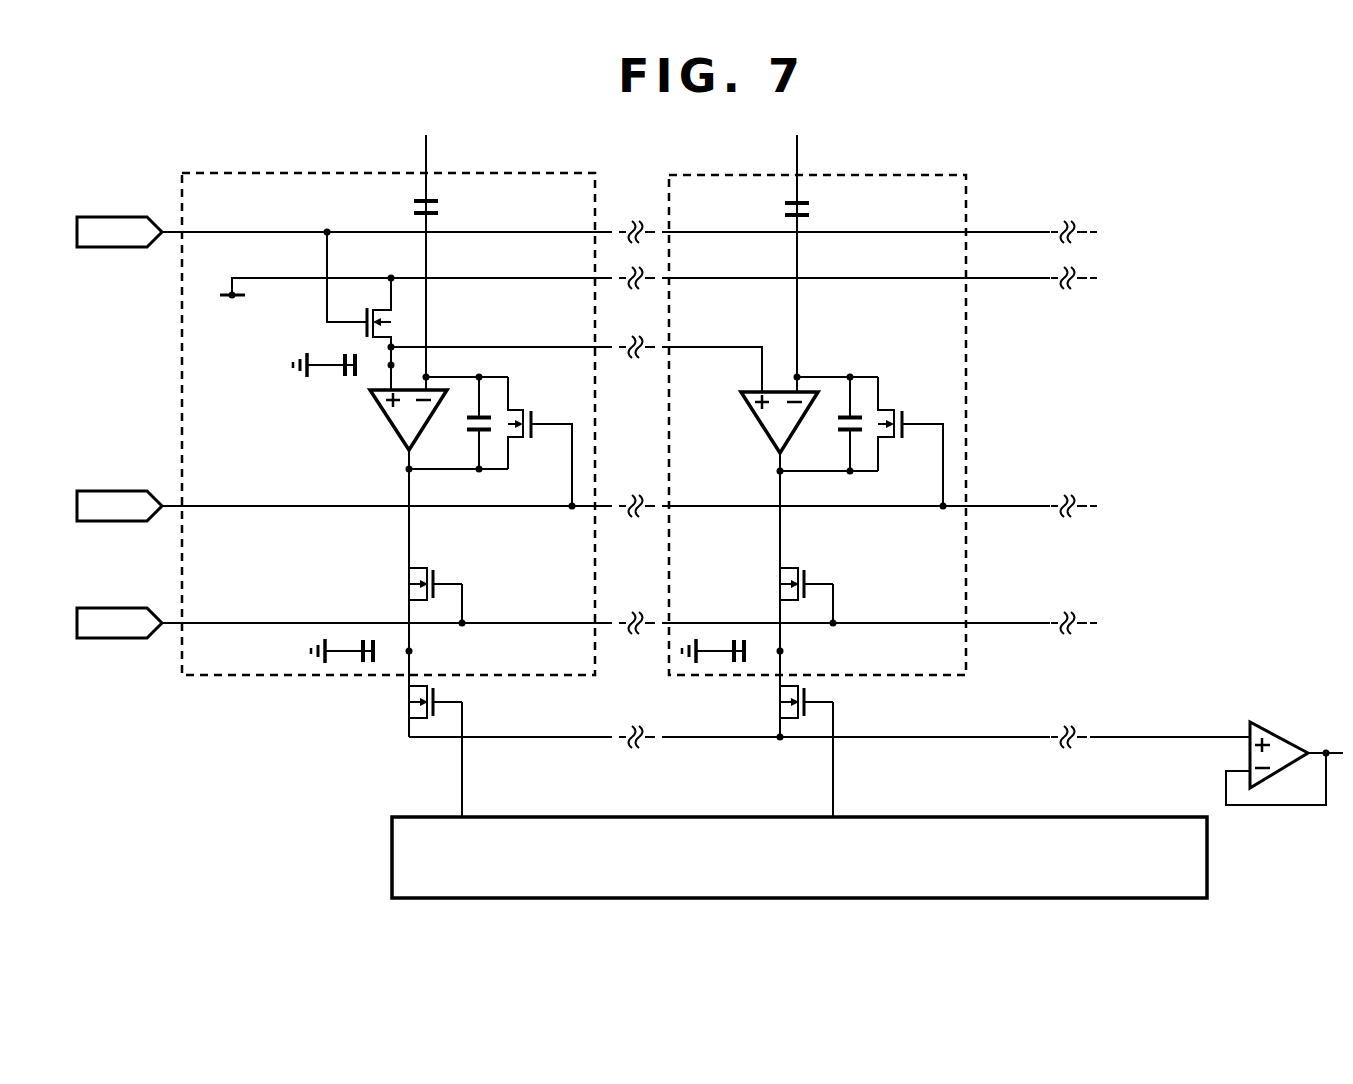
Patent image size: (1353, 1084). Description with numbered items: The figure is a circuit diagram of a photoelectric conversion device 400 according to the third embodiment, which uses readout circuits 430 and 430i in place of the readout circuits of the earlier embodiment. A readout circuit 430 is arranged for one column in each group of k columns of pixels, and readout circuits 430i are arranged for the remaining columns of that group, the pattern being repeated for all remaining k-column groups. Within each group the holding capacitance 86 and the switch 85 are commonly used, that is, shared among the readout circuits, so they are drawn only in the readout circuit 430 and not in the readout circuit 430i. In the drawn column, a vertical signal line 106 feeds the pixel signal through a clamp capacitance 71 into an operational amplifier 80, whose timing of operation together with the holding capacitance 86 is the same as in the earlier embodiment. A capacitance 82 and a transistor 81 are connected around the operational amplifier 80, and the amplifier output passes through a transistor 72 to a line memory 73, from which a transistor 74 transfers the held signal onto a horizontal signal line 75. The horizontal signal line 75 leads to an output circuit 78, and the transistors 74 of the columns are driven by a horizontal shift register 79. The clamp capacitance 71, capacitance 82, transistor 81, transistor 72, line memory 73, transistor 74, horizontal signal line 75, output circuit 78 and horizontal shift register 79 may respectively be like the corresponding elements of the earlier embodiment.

The photoelectric conversion device 400 is at (251, 858).
The readout circuit 430 is at (225, 677).
The readout circuit 430i is at (939, 677).
The vertical signal line 106 is at (428, 151).
The clamp capacitance 71 is at (441, 209).
The switch 85 is at (391, 314).
The holding capacitance 86 is at (351, 380).
The operational amplifier 80 is at (395, 430).
The capacitance 82 is at (468, 419).
The transistor 81 is at (520, 441).
The transistor 72 is at (405, 583).
The line memory 73 is at (367, 670).
The transistor 74 is at (405, 703).
The horizontal signal line 75 is at (430, 740).
The output circuit 78 is at (1284, 738).
The horizontal shift register 79 is at (1108, 816).